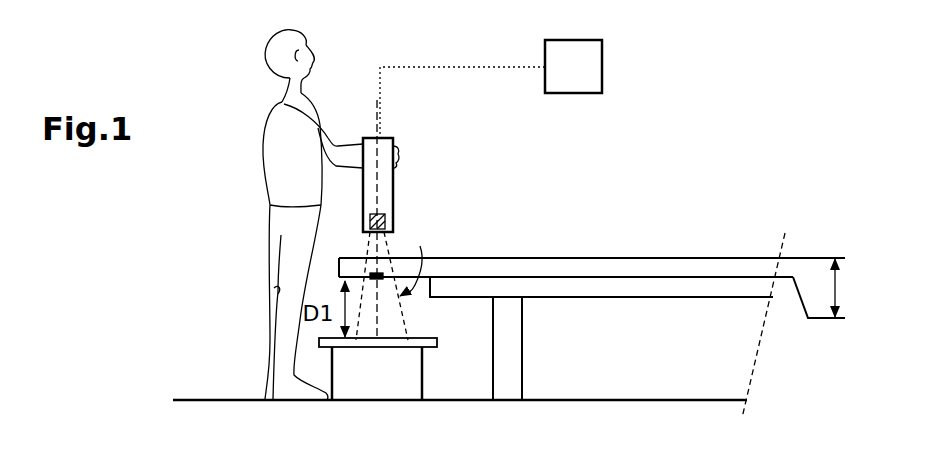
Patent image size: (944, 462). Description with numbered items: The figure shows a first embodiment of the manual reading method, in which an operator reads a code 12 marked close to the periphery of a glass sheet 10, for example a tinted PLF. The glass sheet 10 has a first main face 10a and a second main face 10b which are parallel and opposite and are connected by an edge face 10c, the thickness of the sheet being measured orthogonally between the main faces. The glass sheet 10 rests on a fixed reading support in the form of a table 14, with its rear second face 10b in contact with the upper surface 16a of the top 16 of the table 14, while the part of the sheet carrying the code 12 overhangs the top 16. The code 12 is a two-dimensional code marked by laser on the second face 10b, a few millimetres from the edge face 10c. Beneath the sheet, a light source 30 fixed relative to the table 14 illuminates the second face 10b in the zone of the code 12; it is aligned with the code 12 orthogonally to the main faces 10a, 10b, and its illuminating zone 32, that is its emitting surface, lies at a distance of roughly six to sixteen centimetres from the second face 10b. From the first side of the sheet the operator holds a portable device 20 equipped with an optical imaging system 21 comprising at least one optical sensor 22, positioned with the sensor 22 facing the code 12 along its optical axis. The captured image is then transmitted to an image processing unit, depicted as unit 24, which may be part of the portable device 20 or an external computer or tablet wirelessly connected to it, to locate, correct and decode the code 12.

The glass sheet 10 is at (529, 313).
The first main face 10a is at (502, 257).
The second main face 10b is at (553, 279).
The edge face 10c is at (337, 263).
The code 12 is at (403, 387).
The table 14 is at (635, 323).
The top 16 is at (637, 252).
The upper surface 16a is at (661, 276).
The portable device 20 is at (415, 211).
The optical imaging system 21 is at (394, 189).
The optical sensor 22 is at (394, 221).
The computer unit 24 is at (586, 79).
The light source 30 is at (403, 387).
The illuminating zone 32 is at (421, 333).